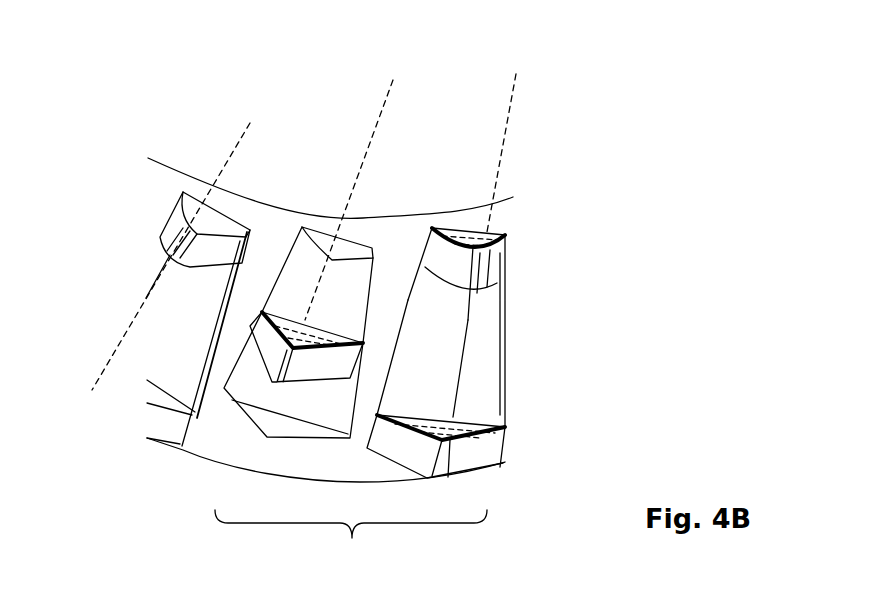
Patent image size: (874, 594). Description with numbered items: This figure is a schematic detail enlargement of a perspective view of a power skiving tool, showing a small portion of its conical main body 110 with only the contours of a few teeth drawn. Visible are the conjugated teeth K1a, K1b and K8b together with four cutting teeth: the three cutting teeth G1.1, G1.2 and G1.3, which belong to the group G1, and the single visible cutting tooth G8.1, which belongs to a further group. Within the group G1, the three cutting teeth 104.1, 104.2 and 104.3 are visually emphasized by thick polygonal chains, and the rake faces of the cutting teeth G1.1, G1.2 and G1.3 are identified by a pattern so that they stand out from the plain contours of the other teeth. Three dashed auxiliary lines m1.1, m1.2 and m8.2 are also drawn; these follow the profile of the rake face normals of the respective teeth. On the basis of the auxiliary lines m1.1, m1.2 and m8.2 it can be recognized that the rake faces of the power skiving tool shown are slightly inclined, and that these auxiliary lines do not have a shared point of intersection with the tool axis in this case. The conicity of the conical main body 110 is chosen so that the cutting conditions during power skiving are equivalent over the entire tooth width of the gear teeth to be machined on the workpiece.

The conical main body 110 is at (512, 198).
The cutting tooth 104.1 is at (494, 232).
The cutting tooth 104.2 is at (332, 346).
The cutting tooth 104.3 is at (510, 428).
The group G1 is at (351, 538).
The cutting tooth G1.1 is at (494, 256).
The cutting tooth G1.2 is at (262, 352).
The cutting tooth G1.3 is at (470, 452).
The cutting tooth G8.1 is at (168, 224).
The conjugated tooth K1a is at (329, 230).
The conjugated tooth K1b is at (472, 212).
The conjugated tooth K8b is at (195, 200).
The dashed auxiliary line m1.1 is at (370, 188).
The dashed auxiliary line m1.2 is at (519, 142).
The dashed auxiliary line m8.2 is at (187, 246).